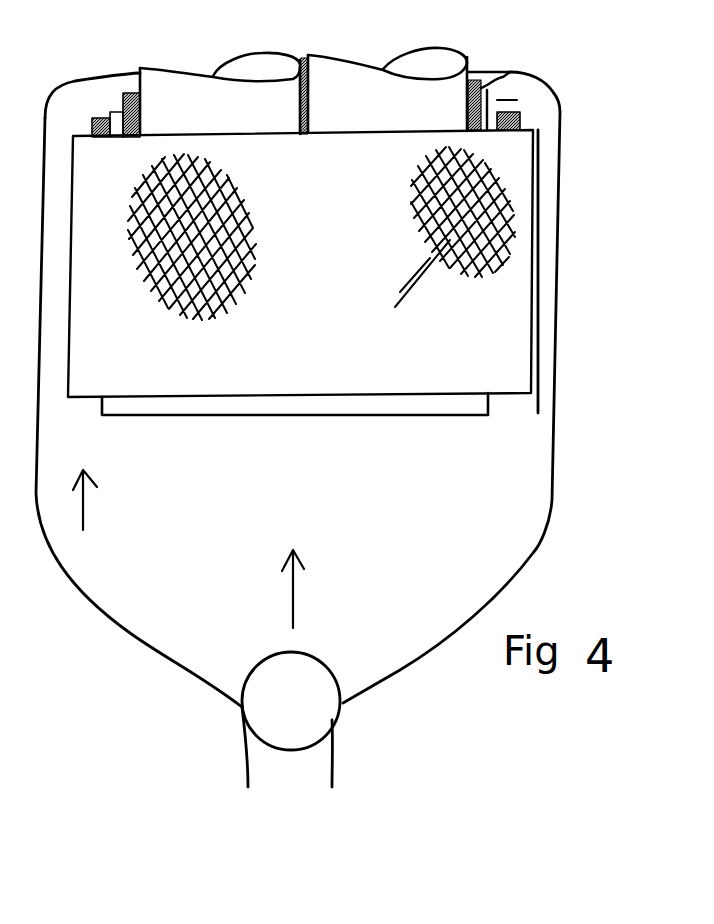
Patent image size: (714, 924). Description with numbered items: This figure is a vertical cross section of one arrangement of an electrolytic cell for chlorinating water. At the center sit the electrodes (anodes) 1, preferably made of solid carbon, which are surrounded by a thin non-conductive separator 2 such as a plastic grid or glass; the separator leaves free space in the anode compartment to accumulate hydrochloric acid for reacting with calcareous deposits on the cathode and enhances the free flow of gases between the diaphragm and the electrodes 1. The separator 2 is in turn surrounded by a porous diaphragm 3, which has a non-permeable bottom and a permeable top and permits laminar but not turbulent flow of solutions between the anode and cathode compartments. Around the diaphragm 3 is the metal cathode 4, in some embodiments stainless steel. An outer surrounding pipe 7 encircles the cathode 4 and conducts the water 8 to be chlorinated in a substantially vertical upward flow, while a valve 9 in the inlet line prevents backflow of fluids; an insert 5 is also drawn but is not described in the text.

The electrodes (anodes) 1 is at (278, 62).
The non-conductive separator 2 is at (510, 72).
The porous diaphragm 3 is at (428, 399).
The metal cathode 4 is at (505, 213).
The seal insert 5 is at (520, 118).
The outer surrounding pipe 7 is at (558, 292).
The water 8 is at (87, 508).
The valve 9 is at (315, 713).